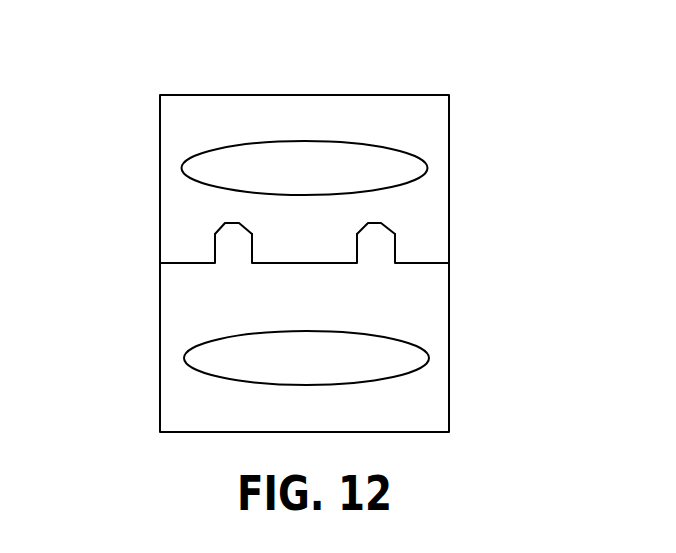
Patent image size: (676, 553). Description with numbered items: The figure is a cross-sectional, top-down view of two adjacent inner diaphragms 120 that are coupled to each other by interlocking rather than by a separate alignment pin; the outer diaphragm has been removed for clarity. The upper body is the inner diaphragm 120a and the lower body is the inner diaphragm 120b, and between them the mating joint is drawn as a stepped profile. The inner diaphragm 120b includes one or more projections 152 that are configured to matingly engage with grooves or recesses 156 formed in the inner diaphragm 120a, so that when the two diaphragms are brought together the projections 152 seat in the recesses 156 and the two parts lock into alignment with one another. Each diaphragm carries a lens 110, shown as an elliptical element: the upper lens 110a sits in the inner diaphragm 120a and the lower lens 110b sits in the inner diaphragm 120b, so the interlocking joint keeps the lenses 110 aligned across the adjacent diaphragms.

The lens 110 is at (375, 259).
The first lens 110a is at (375, 132).
The second lens 110b is at (368, 407).
The inner diaphragm 120 is at (245, 254).
The inner diaphragm 120a is at (253, 161).
The inner diaphragm 120b is at (245, 373).
The projection 152 is at (233, 247).
The groove or recess 156 is at (240, 225).